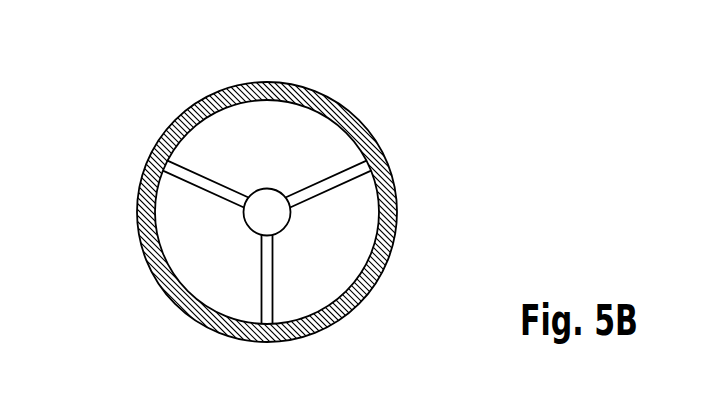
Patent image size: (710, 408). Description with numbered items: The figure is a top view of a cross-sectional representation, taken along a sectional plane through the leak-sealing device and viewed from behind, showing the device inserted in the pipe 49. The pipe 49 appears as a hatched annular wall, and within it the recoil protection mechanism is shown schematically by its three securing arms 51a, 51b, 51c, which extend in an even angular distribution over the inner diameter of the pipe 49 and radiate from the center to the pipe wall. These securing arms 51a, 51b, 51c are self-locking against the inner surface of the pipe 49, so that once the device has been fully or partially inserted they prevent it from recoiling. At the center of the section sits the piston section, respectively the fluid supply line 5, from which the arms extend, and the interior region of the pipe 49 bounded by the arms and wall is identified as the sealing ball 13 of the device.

The fluid supply line 5 is at (268, 212).
The sealing ball 13 is at (340, 233).
The pipe 49 is at (348, 122).
The securing arm 51a is at (340, 177).
The securing arm 51b is at (210, 177).
The securing arm 51c is at (267, 285).